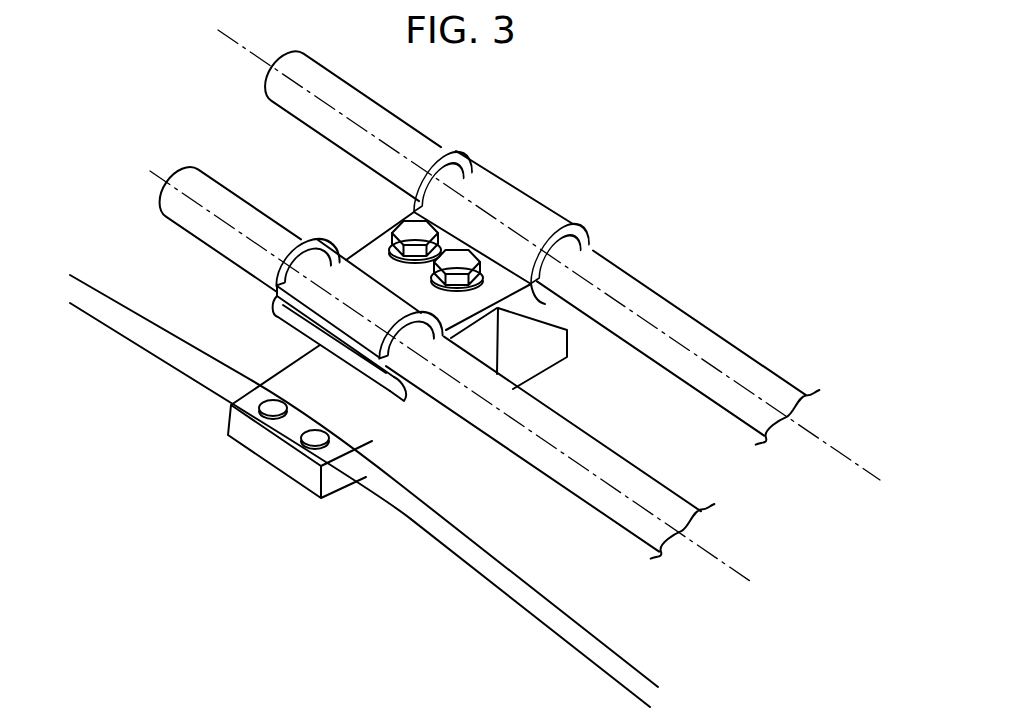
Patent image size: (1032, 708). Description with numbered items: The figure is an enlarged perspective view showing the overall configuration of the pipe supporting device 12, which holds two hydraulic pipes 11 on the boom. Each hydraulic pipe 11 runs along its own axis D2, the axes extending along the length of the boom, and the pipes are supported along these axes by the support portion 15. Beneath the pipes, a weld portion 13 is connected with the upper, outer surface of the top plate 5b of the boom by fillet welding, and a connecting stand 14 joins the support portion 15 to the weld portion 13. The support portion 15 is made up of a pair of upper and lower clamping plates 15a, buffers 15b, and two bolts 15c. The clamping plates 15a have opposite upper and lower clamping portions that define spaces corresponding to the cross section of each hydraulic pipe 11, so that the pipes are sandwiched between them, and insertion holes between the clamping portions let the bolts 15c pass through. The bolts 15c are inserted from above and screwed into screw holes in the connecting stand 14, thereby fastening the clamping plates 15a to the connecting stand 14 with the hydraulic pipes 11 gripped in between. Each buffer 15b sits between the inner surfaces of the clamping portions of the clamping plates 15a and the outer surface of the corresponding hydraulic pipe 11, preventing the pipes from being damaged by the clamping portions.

The hydraulic pipe 11 is at (728, 352).
The pipe supporting device 12 is at (628, 135).
The weld portion 13 is at (266, 452).
The connecting stand 14 is at (488, 345).
The support portion 15 is at (368, 214).
The clamping plate 15a is at (307, 333).
The buffer 15b is at (598, 247).
The bolt 15c is at (466, 255).
The top plate 5b is at (118, 328).
The axis D2 is at (849, 455).